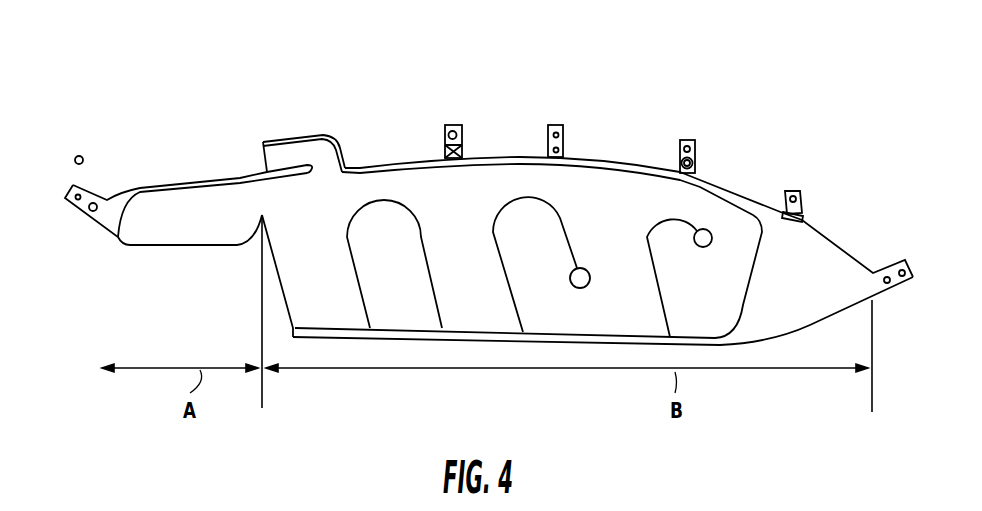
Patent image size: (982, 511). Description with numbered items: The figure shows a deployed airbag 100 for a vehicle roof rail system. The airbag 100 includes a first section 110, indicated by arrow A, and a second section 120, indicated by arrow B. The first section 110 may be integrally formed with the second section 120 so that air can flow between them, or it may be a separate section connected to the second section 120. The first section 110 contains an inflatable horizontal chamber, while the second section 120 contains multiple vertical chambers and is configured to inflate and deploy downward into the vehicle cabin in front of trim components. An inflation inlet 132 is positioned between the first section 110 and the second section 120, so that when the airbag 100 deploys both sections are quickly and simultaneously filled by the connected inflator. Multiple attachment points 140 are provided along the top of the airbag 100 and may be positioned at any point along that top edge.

The airbag 100 is at (509, 93).
The first section 110 is at (178, 235).
The second section 120 is at (620, 193).
The inlet 132 is at (278, 153).
The attachment points 140 is at (75, 183).